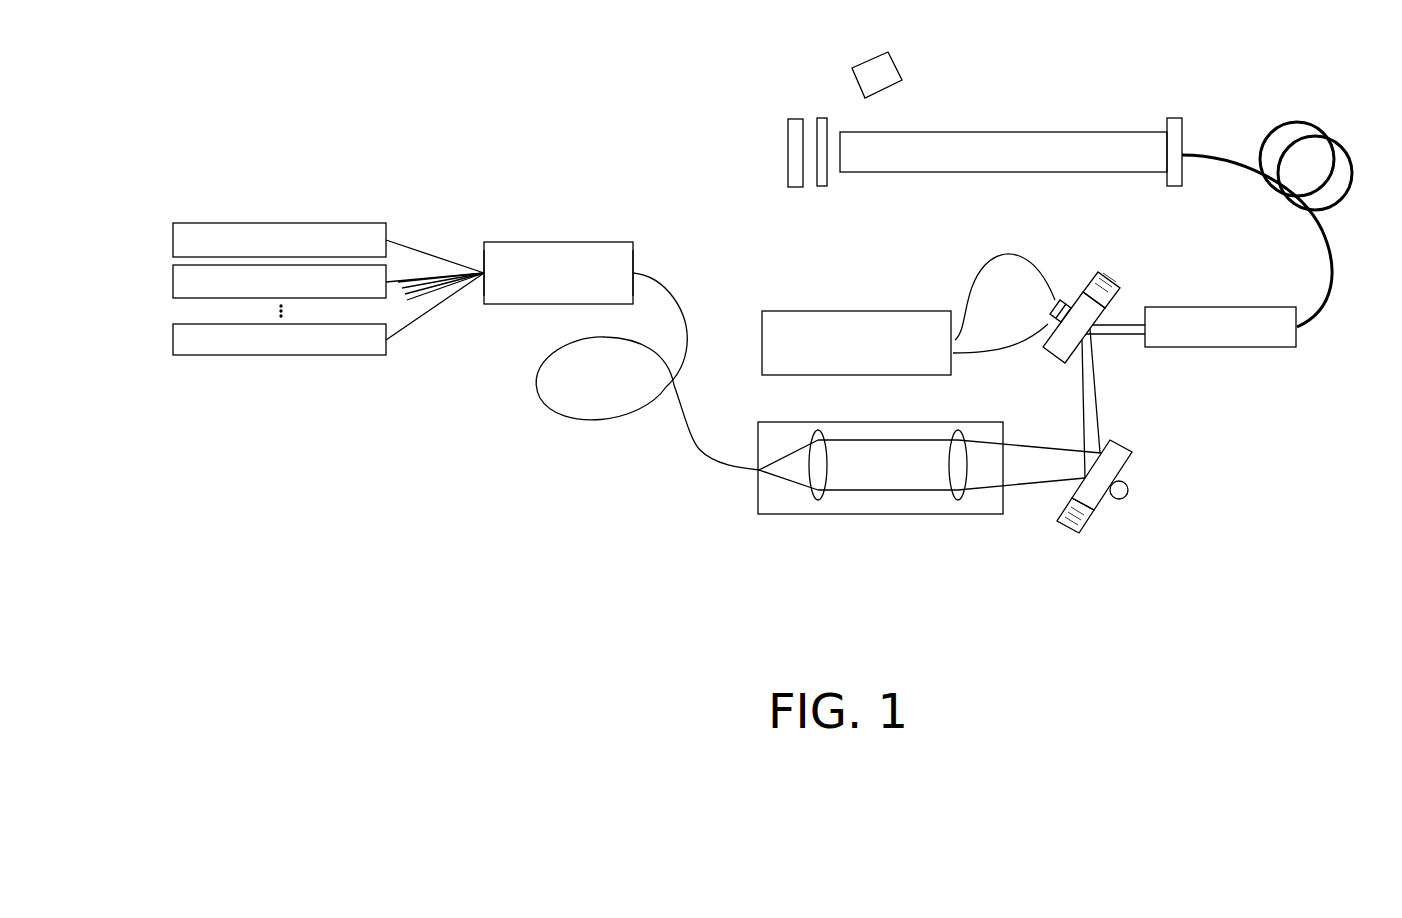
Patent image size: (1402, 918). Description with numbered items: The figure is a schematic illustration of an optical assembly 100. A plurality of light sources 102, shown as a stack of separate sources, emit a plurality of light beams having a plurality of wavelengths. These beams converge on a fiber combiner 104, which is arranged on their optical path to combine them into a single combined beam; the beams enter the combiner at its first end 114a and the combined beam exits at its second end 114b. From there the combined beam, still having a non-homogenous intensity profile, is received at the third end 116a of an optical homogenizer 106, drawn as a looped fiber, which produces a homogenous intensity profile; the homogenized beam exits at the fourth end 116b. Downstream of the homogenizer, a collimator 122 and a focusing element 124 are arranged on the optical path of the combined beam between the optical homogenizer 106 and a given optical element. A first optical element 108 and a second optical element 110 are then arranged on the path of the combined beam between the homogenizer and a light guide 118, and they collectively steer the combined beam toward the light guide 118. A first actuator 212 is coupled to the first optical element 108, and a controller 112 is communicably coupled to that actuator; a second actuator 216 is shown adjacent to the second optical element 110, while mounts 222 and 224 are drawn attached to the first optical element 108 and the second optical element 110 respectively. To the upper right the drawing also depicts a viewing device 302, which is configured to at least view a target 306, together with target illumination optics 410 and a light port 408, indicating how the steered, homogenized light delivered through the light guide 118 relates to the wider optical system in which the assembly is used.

The optical assembly 100 is at (767, 307).
The plurality of light sources 102 is at (323, 254).
The fiber combiner 104 is at (549, 230).
The first end 114a is at (424, 230).
The second end 114b is at (676, 223).
The third end 116a is at (691, 296).
The optical homogenizer 106 is at (556, 399).
The fourth end 116b is at (715, 491).
The collimator 122 is at (814, 518).
The focusing element 124 is at (961, 518).
The controller 112 is at (908, 297).
The first optical element 108 is at (1074, 302).
The mount 222 is at (1121, 266).
The first actuator 212 is at (1032, 306).
The second optical element 110 is at (1131, 458).
The mount 224 is at (1084, 540).
The second actuator 216 is at (1145, 508).
The light guide 118 is at (1258, 270).
The viewing device 302 is at (848, 53).
The target 306 is at (745, 134).
The target illumination optics 410 is at (774, 120).
The light port 408 is at (1136, 128).